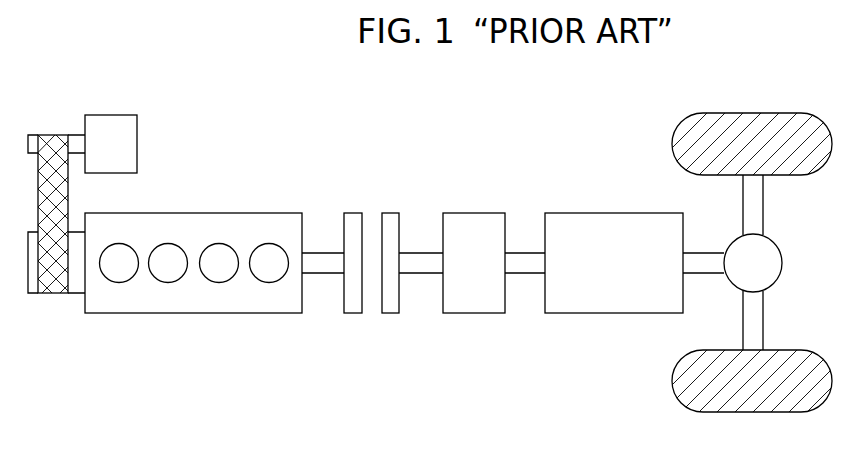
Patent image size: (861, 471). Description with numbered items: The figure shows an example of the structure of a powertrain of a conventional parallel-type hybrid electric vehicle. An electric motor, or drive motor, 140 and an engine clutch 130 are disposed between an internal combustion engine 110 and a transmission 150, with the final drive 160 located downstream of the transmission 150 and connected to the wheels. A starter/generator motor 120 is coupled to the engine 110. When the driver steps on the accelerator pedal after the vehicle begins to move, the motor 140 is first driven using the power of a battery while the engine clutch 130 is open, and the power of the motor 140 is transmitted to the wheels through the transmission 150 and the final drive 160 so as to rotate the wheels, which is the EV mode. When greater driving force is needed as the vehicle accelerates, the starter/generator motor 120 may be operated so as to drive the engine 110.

The internal combustion engine 110 is at (270, 213).
The starter/generator motor 120 is at (100, 115).
The engine clutch 130 is at (392, 213).
The electric motor 140 is at (470, 213).
The transmission 150 is at (648, 213).
The final drive 160 is at (780, 248).